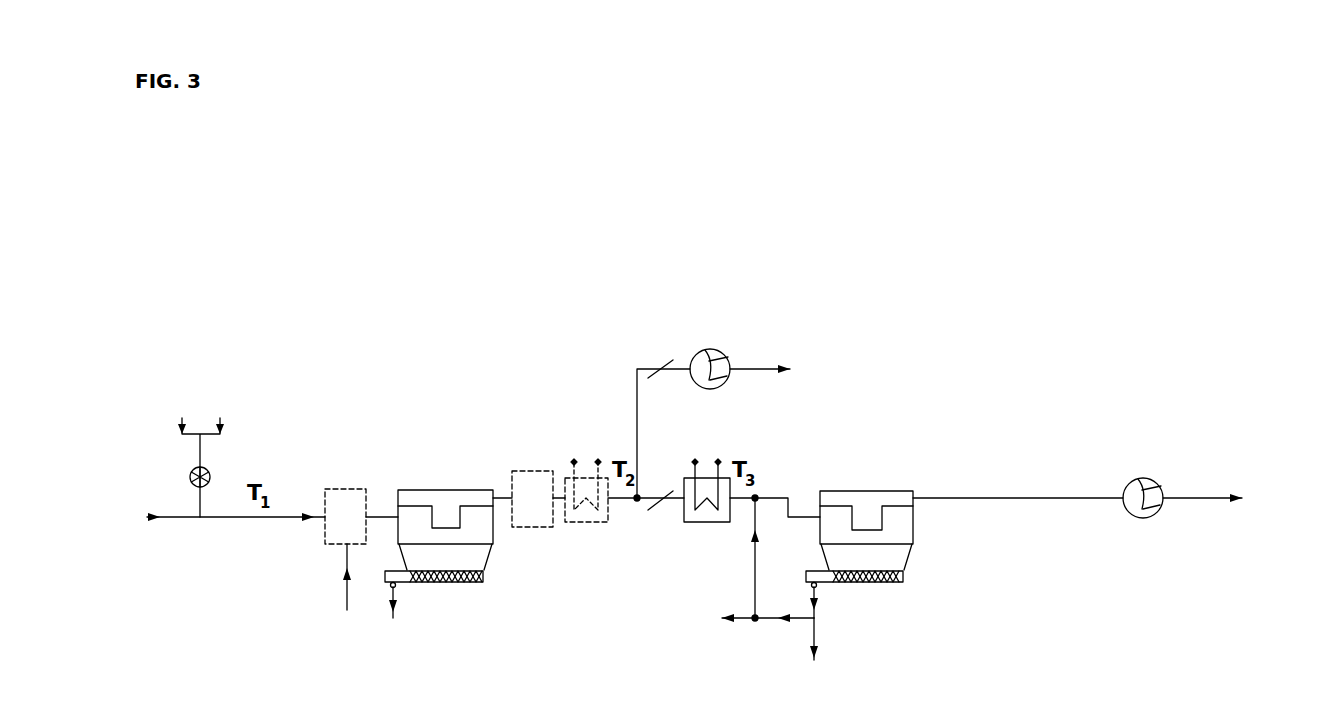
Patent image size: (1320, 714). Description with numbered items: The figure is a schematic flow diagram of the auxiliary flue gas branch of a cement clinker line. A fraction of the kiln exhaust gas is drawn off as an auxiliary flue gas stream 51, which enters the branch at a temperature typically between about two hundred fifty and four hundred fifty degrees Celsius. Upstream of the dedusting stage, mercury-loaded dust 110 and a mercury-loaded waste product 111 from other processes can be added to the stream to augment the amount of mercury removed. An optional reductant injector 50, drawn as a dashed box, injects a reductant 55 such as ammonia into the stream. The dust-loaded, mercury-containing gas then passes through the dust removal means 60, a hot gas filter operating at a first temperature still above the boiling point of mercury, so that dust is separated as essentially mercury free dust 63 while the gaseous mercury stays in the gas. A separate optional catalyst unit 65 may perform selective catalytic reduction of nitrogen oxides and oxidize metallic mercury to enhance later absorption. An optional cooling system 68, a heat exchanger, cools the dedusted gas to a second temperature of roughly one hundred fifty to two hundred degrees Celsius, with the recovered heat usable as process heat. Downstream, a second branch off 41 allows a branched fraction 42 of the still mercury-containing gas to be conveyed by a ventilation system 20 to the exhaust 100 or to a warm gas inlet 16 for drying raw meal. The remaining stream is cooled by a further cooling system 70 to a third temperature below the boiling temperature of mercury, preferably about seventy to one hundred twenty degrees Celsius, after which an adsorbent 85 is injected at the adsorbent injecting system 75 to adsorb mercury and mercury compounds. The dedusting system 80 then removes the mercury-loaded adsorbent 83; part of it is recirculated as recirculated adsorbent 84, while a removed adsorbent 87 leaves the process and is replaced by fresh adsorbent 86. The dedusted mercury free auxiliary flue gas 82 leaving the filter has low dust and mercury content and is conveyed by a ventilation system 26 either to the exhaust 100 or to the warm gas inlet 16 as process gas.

The mercury-loaded waste product 111 is at (178, 425).
The mercury-loaded dust 110 is at (223, 425).
The auxiliary flue gas stream 51 is at (147, 511).
The reductant injector 50 is at (347, 488).
The reductant 55 is at (345, 597).
The dust removal means 60 is at (447, 489).
The mercury free dust 63 is at (398, 605).
The catalyst unit 65 is at (532, 470).
The cooling system 68 is at (588, 522).
The second branch off 41 is at (637, 503).
The ventilation system 20 is at (710, 348).
The branched fraction of auxiliary flue gas stream 42 is at (748, 368).
The exhaust 100 is at (1047, 435).
The warm gas inlet 16 is at (1051, 447).
The cooling system 70 is at (706, 522).
The adsorbent injecting system 75 is at (757, 496).
The adsorbent 85 is at (753, 588).
The recirculated adsorbent 84 is at (782, 622).
The fresh adsorbent 86 is at (725, 622).
The dedusting system 80 is at (868, 490).
The mercury-loaded adsorbent 83 is at (820, 600).
The removed adsorbent 87 is at (820, 630).
The dedusted mercury free auxiliary flue gas 82 is at (940, 497).
The ventilation system 26 is at (1140, 519).